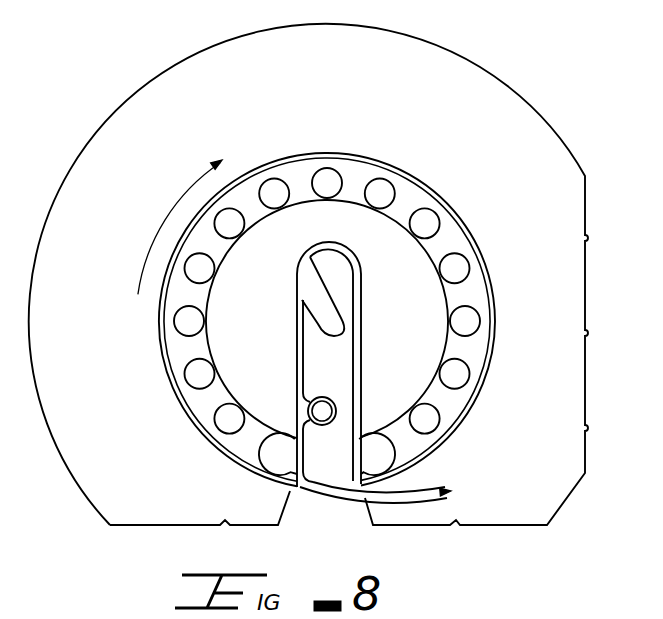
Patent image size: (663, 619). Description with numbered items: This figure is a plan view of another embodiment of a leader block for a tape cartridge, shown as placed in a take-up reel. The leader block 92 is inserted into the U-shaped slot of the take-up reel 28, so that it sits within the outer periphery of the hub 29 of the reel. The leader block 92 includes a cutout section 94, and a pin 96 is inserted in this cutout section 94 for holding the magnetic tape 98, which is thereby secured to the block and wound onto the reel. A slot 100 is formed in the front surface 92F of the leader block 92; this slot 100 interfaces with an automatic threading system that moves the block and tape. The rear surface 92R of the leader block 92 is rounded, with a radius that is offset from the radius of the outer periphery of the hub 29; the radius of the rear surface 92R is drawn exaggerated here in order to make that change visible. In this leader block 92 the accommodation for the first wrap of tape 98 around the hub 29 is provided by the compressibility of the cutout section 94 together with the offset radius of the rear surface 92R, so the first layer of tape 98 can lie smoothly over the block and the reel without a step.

The take-up reel 28 is at (562, 121).
The hub 29 is at (452, 236).
The leader block 92 is at (346, 401).
The front surface 92F is at (352, 276).
The rear surface 92R is at (332, 477).
The cutout section 94 is at (302, 404).
The pin 96 is at (325, 410).
The magnetic tape 98 is at (423, 503).
The slot 100 is at (305, 276).